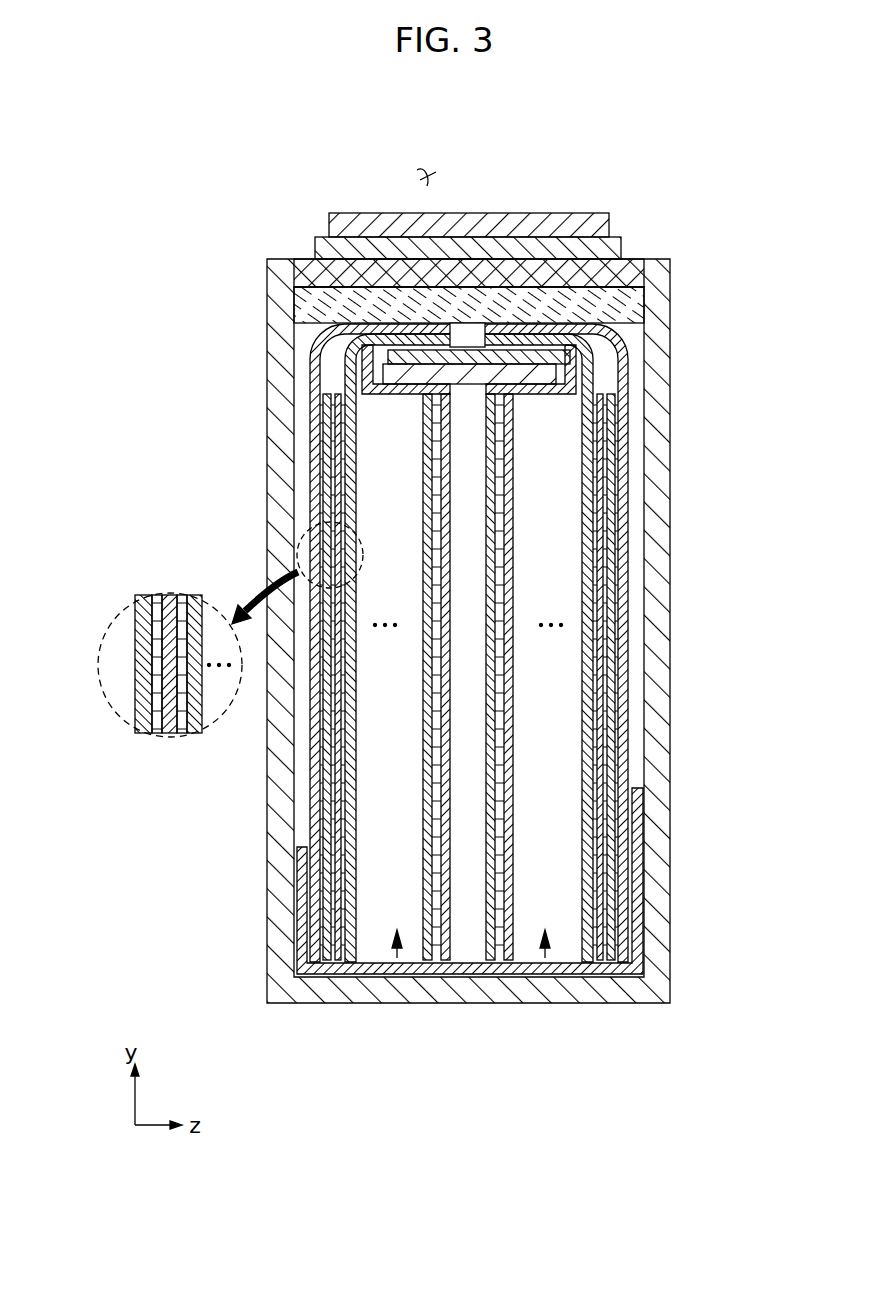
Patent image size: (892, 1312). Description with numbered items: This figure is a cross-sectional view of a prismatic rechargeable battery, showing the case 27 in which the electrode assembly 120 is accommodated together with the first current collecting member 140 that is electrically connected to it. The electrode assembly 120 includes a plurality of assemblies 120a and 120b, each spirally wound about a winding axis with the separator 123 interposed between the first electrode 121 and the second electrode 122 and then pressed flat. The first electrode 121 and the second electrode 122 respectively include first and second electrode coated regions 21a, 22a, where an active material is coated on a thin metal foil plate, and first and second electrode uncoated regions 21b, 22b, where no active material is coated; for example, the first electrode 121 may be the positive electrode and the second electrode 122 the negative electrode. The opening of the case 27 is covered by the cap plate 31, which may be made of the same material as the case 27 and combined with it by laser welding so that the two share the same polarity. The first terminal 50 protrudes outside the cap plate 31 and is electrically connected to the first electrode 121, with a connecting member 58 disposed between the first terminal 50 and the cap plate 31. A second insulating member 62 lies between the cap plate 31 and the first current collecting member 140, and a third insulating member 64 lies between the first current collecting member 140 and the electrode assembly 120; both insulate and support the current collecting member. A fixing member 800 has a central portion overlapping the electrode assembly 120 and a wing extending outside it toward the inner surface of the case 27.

The case 27 is at (283, 990).
The cap plate 31 is at (310, 272).
The first terminal 50 is at (572, 227).
The connecting member 58 is at (623, 248).
The second insulating member 62 is at (640, 305).
The third insulating member 64 is at (543, 374).
The first current collecting member 140 is at (540, 354).
The first electrode coated region 21a is at (313, 960).
The first electrode uncoated region 21b is at (427, 327).
The second electrode coated region 22a is at (330, 960).
The second electrode uncoated region 22b is at (618, 677).
The first electrode 121 is at (752, 532).
The second electrode 122 is at (752, 643).
The separator 123 is at (155, 592).
The electrode assembly 120 is at (390, 1106).
The assembly 120a is at (397, 958).
The assembly 120b is at (545, 958).
The fixing member 800 is at (635, 848).